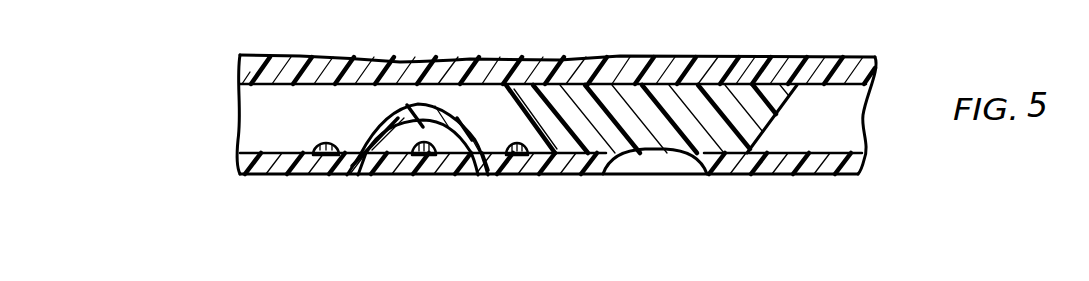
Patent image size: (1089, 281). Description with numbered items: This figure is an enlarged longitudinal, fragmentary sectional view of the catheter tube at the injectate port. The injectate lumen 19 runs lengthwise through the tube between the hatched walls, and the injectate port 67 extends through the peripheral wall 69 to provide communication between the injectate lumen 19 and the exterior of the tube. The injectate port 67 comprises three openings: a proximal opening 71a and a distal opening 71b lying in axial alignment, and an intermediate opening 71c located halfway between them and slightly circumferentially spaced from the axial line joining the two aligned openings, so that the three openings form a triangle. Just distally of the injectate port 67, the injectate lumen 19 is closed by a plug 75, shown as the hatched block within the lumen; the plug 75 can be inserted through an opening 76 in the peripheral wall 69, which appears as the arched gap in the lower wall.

The injectate lumen 19 is at (252, 104).
The peripheral wall 69 is at (265, 172).
The injectate port 67 is at (413, 158).
The proximal opening 71a is at (328, 141).
The distal opening 71b is at (522, 154).
The intermediate opening 71c is at (437, 150).
The plug 75 is at (731, 136).
The opening 76 is at (663, 165).